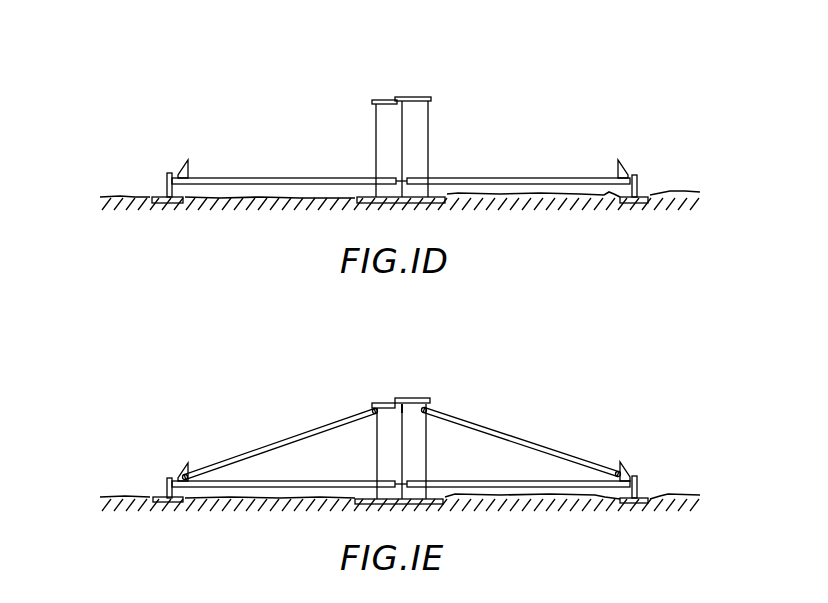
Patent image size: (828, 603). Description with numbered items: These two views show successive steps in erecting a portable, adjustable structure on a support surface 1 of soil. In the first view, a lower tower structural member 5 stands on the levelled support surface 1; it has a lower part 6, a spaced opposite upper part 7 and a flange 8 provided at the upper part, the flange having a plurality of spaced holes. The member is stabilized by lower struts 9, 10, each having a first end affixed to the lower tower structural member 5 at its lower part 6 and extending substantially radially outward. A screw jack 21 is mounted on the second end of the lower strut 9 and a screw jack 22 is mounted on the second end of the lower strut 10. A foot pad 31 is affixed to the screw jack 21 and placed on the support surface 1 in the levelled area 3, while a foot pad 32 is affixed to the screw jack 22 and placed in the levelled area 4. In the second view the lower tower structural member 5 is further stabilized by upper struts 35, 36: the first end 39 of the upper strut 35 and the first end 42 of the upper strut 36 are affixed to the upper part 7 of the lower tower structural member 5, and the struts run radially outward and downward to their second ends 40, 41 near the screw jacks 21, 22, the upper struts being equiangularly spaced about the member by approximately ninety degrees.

In FIG. 1D, the support surface 1 is at (672, 192).
In FIG. 1E, the support surface 1 is at (693, 494).
In FIG. 1D, the levelled area 3 is at (148, 196).
In FIG. 1D, the levelled area 4 is at (609, 198).
In FIG. 1D, the lower tower structural member 5 is at (410, 119).
In FIG. 1E, the lower tower structural member 5 is at (426, 426).
In FIG. 1D, the lower part 6 is at (405, 200).
In FIG. 1E, the lower part 6 is at (401, 490).
In FIG. 1E, the upper part 7 is at (402, 404).
In FIG. 1D, the flange 8 is at (410, 98).
In FIG. 1E, the flange 8 is at (389, 403).
In FIG. 1D, the lower strut 9 is at (270, 178).
In FIG. 1E, the lower strut 9 is at (305, 481).
In FIG. 1D, the lower strut 10 is at (517, 178).
In FIG. 1E, the lower strut 10 is at (465, 481).
In FIG. 1D, the screw jack 21 is at (182, 159).
In FIG. 1E, the screw jack 21 is at (181, 464).
In FIG. 1D, the screw jack 22 is at (626, 161).
In FIG. 1E, the screw jack 22 is at (634, 477).
In FIG. 1D, the foot pad 31 is at (164, 196).
In FIG. 1E, the foot pad 31 is at (160, 496).
In FIG. 1D, the foot pad 32 is at (640, 197).
In FIG. 1E, the foot pad 32 is at (645, 497).
In FIG. 1E, the upper strut 35 is at (258, 446).
In FIG. 1E, the upper strut 36 is at (518, 437).
In FIG. 1E, the first end 39 is at (374, 408).
In FIG. 1E, the second end 40 is at (190, 471).
In FIG. 1E, the second end 41 is at (617, 468).
In FIG. 1E, the first end 42 is at (427, 410).